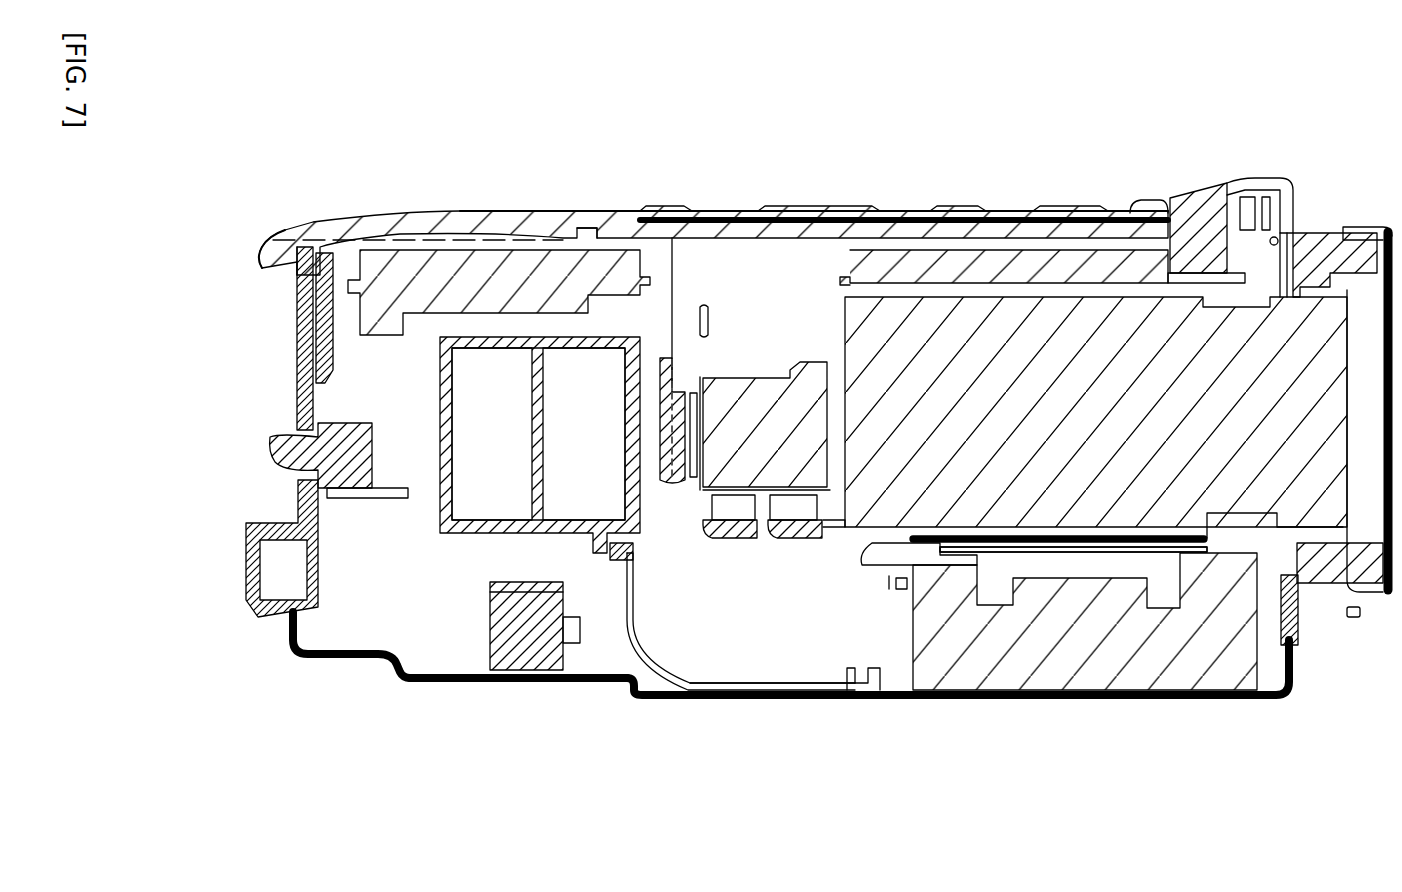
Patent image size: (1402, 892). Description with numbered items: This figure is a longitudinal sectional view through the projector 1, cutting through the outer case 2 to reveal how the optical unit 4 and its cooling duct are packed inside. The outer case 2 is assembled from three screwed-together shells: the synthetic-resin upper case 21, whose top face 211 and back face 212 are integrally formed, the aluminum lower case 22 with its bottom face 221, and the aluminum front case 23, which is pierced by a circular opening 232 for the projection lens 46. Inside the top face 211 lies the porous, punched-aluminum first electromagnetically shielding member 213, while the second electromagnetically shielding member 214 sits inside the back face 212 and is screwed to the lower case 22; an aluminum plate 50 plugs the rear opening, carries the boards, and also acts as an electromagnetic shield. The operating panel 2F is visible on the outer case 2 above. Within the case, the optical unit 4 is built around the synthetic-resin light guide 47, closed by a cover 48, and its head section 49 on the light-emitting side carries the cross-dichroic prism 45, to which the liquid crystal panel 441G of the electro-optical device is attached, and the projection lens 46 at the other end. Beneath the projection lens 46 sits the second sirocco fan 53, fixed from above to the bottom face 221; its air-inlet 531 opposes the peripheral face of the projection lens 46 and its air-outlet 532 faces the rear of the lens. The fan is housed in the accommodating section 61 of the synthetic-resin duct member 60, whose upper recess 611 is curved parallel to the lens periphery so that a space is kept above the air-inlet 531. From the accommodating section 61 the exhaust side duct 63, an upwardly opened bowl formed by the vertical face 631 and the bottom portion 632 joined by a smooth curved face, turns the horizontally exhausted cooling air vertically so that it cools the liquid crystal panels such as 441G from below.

The projector 1 is at (1056, 158).
The outer case 2 is at (548, 212).
The operating panel 2F is at (856, 207).
The optical unit 4 is at (797, 283).
The upper case 21 is at (440, 213).
The top face 211 is at (352, 220).
The back face 212 is at (308, 310).
The first electromagnetically shielding member 213 is at (590, 226).
The second electromagnetically shielding member 214 is at (303, 290).
The lower case 22 is at (835, 700).
The bottom face 221 is at (738, 700).
The front case 23 is at (1298, 648).
The circular opening 232 is at (1295, 183).
The cross-dichroic prism 45 is at (760, 400).
The projection lens 46 is at (1317, 303).
The light guide 47 is at (438, 520).
The cover 48 is at (437, 346).
The head section 49 is at (812, 538).
The aluminum plate 50 is at (318, 345).
The second sirocco fan 53 is at (1090, 690).
The air-inlet 531 is at (997, 575).
The air-outlet 532 is at (880, 668).
The duct member 60 is at (625, 635).
The accommodating section 61 is at (1157, 538).
The recess 611 is at (1073, 549).
The exhaust side duct 63 is at (613, 553).
The vertical face 631 is at (636, 573).
The bottom portion 632 is at (753, 682).
The liquid crystal panel 441G is at (652, 445).